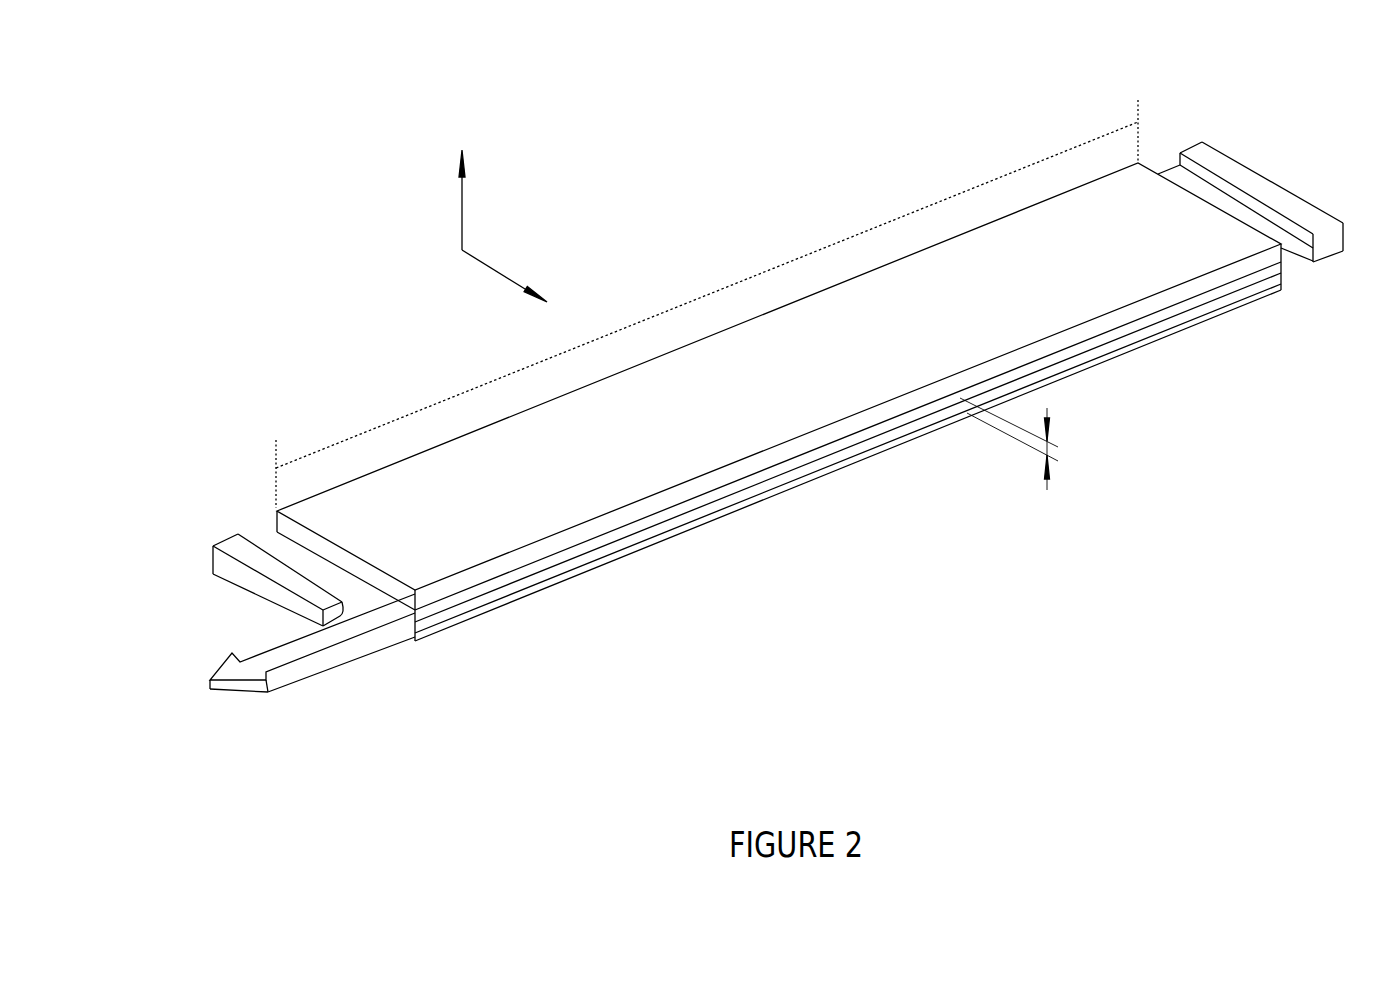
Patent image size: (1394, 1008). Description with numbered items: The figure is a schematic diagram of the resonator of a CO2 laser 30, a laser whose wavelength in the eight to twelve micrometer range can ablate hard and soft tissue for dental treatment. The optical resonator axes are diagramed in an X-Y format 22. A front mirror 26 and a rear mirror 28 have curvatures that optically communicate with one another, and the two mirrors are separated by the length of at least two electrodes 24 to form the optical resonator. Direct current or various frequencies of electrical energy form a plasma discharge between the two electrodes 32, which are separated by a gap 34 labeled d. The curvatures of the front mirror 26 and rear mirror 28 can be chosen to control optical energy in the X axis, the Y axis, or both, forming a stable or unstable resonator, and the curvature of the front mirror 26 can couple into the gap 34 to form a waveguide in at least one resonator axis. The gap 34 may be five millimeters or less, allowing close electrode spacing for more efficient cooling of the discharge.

The X-Y format 22 is at (462, 213).
The electrodes 24 is at (773, 270).
The front mirror 26 is at (212, 577).
The rear mirror 28 is at (1247, 178).
The CO2 laser 30 is at (288, 653).
The two electrodes 32 is at (645, 545).
The gap 34 is at (1100, 480).